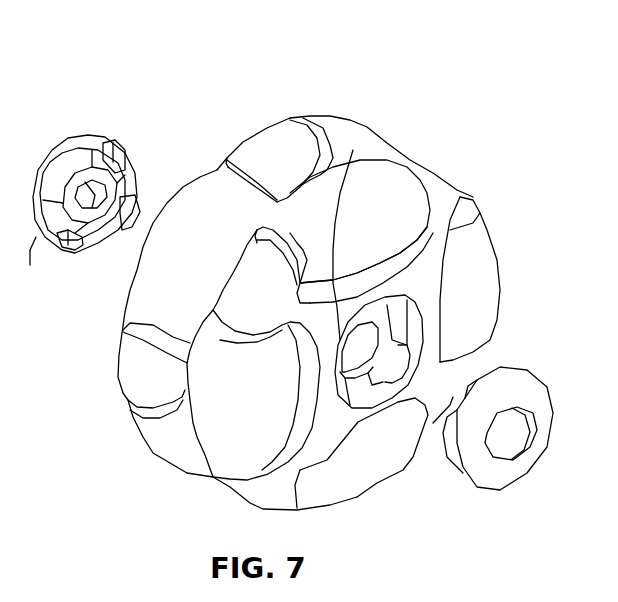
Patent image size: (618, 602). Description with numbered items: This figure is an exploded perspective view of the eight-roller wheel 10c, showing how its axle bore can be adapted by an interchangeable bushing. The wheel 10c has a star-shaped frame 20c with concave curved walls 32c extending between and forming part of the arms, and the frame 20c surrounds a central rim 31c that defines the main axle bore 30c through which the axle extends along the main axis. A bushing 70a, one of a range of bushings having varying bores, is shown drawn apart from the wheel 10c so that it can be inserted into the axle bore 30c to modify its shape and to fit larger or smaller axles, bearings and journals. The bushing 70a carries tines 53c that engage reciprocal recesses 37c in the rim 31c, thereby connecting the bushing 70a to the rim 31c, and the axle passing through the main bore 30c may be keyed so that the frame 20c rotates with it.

The wheel 10c is at (344, 286).
The frame 20c is at (330, 427).
The axle bore 30c is at (358, 345).
The rim 31c is at (353, 150).
The concave curved wall 32c is at (415, 250).
The recess 37c is at (453, 397).
The tine 53c is at (125, 160).
The bushing 70a is at (30, 265).